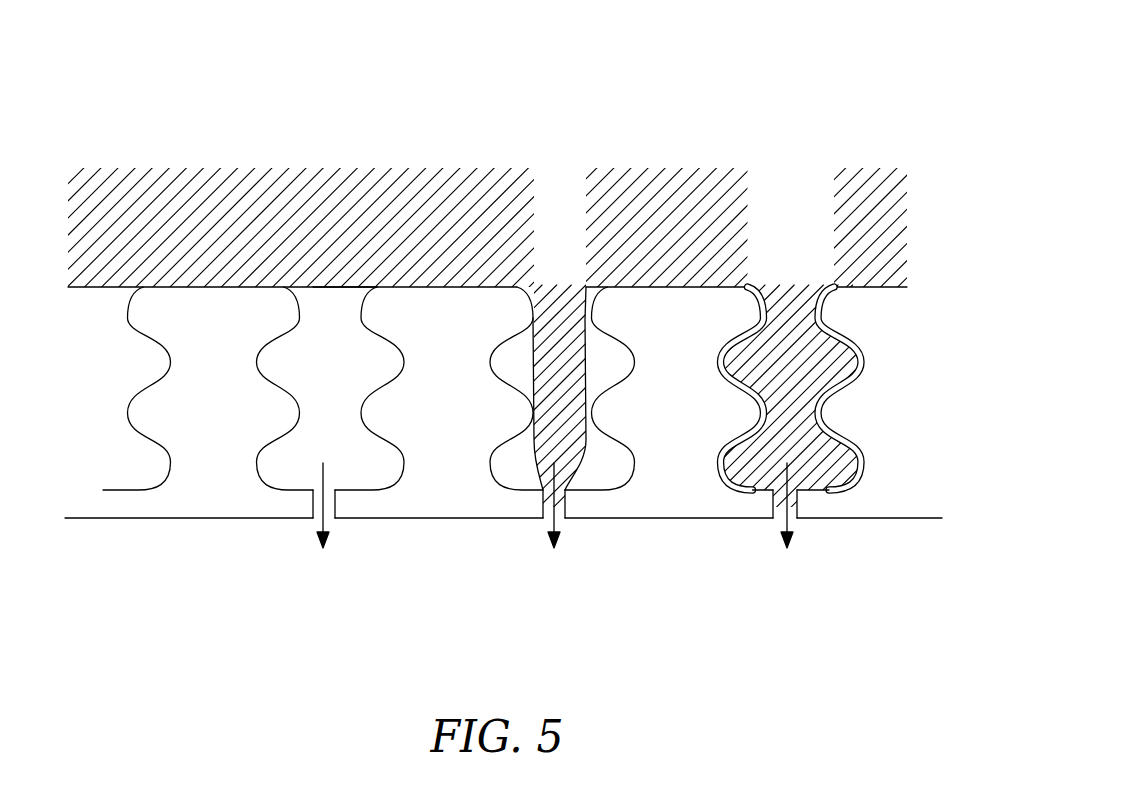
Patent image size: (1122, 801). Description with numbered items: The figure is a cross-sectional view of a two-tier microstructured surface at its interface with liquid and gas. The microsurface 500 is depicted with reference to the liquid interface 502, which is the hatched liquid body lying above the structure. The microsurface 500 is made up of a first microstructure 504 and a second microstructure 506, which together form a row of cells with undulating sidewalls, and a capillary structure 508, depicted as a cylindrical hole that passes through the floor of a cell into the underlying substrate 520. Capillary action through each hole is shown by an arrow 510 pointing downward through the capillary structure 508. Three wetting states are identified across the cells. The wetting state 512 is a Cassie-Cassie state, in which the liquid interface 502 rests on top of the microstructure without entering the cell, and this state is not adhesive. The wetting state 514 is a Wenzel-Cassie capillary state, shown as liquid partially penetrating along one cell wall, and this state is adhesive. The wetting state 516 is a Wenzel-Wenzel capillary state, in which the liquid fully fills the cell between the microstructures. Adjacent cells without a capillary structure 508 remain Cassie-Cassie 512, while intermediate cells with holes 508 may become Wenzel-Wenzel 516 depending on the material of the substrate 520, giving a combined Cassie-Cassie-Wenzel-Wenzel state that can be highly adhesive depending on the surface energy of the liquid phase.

The microsurface 500 is at (543, 303).
The liquid interface 502 is at (255, 203).
The first microstructure 504 is at (172, 297).
The second microstructure 506 is at (158, 417).
The capillary structure 508 is at (310, 502).
The capillary action arrow 510 is at (334, 530).
The Cassie-Cassie wetting state 512 is at (352, 283).
The Wenzel-Cassie capillary state 514 is at (568, 300).
The Wenzel-Wenzel capillary state 516 is at (793, 300).
The substrate 520 is at (141, 507).